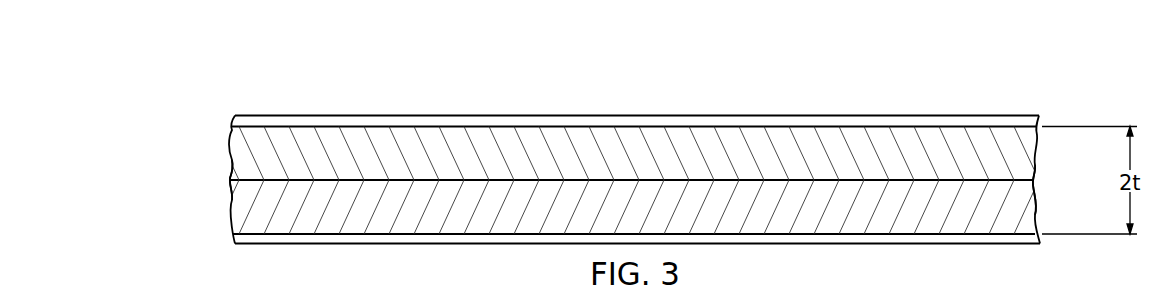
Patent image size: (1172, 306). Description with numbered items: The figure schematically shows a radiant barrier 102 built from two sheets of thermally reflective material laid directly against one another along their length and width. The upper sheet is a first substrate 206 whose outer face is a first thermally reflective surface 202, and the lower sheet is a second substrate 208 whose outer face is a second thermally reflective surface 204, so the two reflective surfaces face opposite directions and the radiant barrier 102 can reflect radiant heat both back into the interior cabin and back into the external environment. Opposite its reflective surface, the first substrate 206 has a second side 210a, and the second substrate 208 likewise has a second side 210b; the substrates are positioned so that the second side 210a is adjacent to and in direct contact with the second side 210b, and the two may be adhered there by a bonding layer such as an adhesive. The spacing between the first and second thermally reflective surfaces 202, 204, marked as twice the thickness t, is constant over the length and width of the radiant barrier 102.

The radiant barrier 102 is at (1003, 94).
The first thermally reflective surface 202 is at (278, 116).
The second thermally reflective surface 204 is at (340, 245).
The first substrate 206 is at (230, 146).
The second substrate 208 is at (230, 226).
The second side of the first substrate 210a is at (230, 180).
The second side of the second substrate 210b is at (1033, 180).